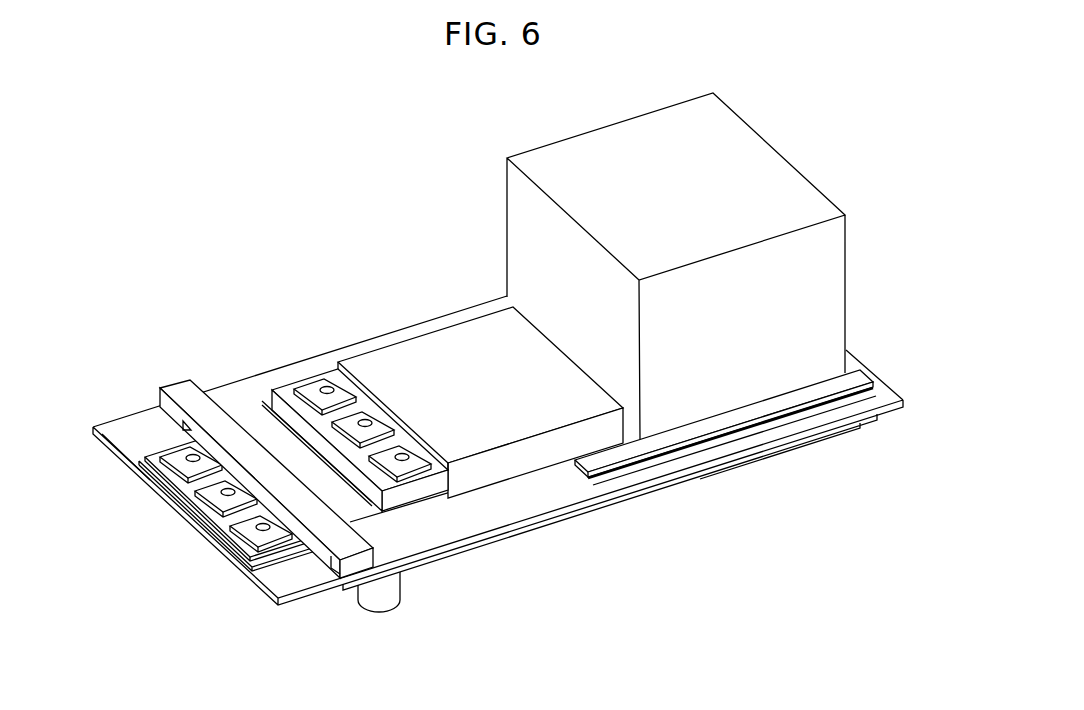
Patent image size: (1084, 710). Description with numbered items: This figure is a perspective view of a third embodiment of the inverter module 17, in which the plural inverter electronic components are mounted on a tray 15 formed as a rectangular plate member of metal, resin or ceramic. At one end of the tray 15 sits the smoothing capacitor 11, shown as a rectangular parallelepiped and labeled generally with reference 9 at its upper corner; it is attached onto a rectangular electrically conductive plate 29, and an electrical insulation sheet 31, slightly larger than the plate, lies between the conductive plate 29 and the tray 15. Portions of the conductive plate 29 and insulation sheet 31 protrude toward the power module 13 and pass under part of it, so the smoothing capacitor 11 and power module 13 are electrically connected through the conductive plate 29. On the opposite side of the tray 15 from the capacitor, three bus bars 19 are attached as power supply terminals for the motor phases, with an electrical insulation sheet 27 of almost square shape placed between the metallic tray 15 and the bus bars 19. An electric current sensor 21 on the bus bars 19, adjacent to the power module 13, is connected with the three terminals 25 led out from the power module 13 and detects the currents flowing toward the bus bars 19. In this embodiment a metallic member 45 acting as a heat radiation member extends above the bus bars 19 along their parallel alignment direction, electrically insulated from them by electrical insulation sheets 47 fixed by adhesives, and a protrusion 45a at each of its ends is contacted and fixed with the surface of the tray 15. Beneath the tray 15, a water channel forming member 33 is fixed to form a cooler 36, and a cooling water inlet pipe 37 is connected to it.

The electronic component 9 is at (676, 254).
The smoothing capacitor 11 is at (772, 148).
The power module 13 is at (416, 352).
The tray 15 is at (498, 450).
The inverter module 17 is at (480, 307).
The bus bars 19 is at (240, 538).
The electric current sensor 21 is at (286, 389).
The terminals 25 is at (392, 452).
The electrical insulation sheet 27 is at (213, 537).
The electrically conductive plate 29 is at (703, 430).
The electrical insulation sheet 31 is at (777, 418).
The water channel forming member 33 is at (568, 510).
The cooler 36 is at (637, 500).
The cooling water inlet pipe 37 is at (387, 605).
The metallic member 45 is at (186, 382).
The protrusion 45a is at (183, 418).
The electrical insulation sheets 47 is at (182, 421).